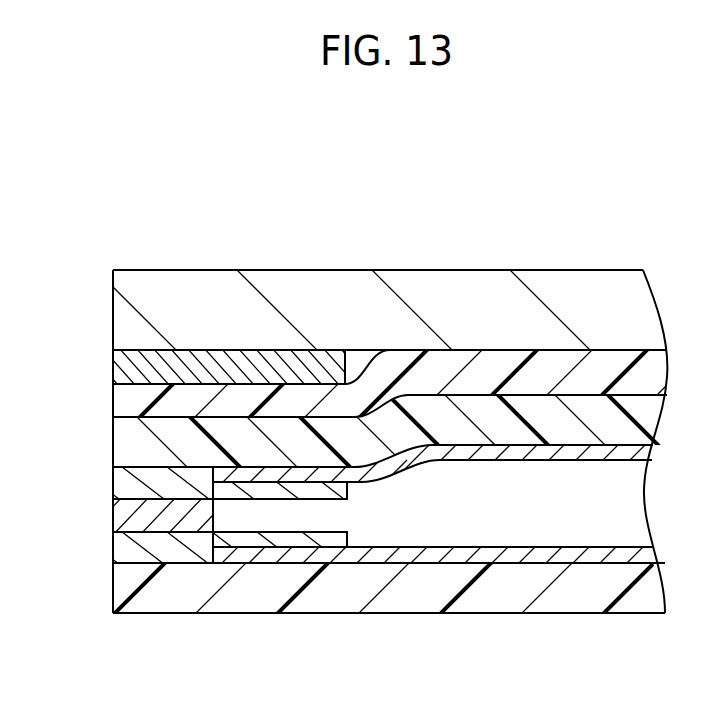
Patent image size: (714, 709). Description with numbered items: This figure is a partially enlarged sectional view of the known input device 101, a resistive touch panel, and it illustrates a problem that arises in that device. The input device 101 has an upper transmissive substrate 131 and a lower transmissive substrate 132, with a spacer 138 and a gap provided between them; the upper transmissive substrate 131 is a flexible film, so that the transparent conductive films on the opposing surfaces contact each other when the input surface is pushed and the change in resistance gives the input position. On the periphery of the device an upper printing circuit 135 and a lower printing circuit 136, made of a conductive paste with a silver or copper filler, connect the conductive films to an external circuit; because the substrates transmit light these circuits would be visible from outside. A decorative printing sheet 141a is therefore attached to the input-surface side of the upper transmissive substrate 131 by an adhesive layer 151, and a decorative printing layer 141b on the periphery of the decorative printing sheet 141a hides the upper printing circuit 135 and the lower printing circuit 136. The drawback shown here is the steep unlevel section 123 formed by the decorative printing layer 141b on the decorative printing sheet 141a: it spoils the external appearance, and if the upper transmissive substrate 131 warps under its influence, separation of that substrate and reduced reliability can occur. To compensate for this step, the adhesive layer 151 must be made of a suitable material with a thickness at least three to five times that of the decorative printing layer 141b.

The input device 101 is at (584, 143).
The unlevel section 123 is at (352, 340).
The upper transmissive substrate 131 is at (470, 405).
The lower transmissive substrate 132 is at (320, 600).
The upper printing circuit 135 is at (118, 477).
The lower printing circuit 136 is at (118, 547).
The spacer 138 is at (118, 508).
The decorative printing sheet 141a is at (612, 282).
The decorative printing layer 141b is at (158, 372).
The adhesive layer 151 is at (551, 372).